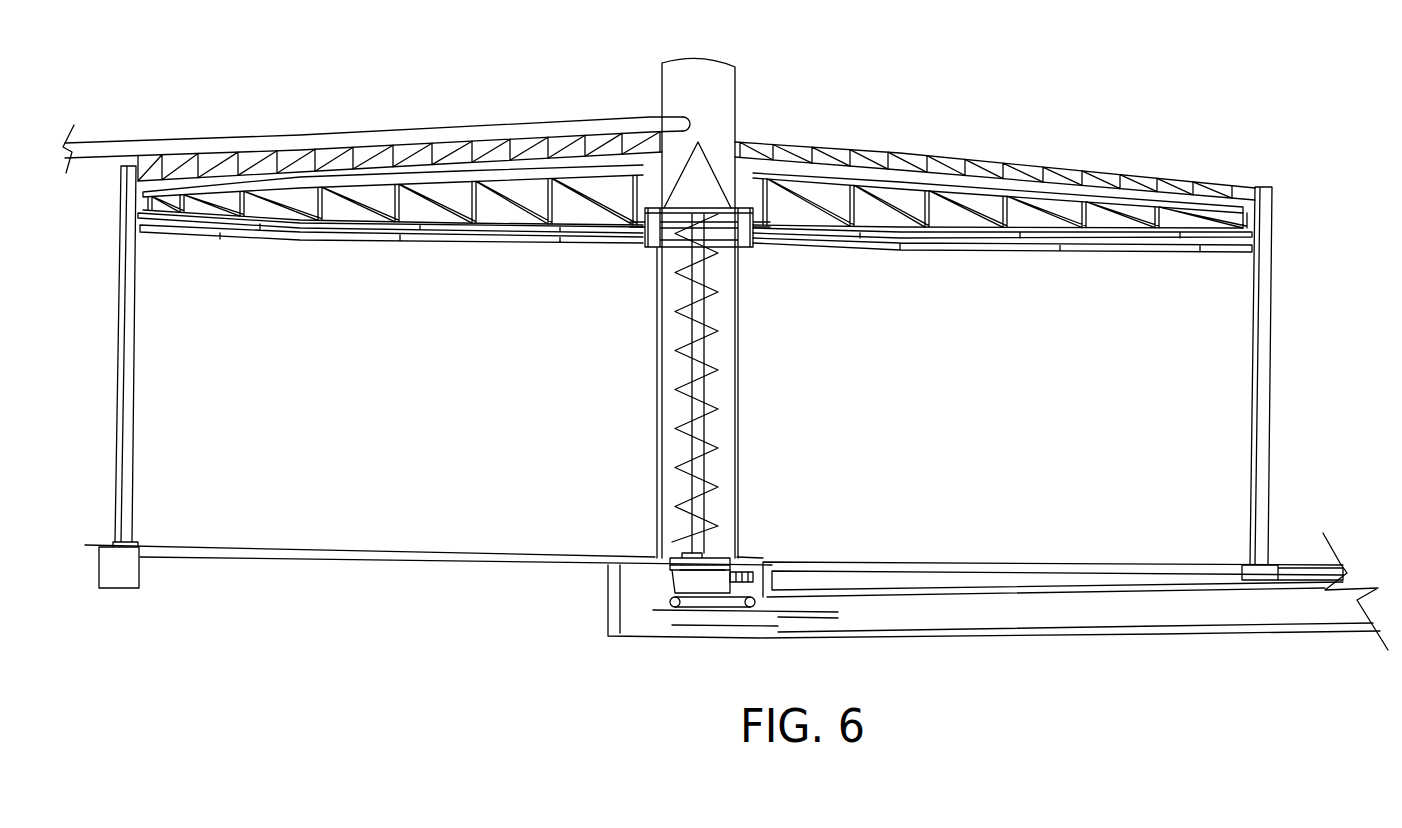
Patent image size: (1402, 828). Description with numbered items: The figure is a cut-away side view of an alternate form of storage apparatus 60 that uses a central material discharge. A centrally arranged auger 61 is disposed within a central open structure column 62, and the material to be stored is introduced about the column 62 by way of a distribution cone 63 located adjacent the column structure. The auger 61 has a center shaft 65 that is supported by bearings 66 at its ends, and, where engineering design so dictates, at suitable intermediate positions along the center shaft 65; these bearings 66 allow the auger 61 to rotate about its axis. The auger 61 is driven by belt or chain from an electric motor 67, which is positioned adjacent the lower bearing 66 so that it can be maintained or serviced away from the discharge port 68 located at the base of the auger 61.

The storage apparatus 60 is at (925, 125).
The auger 61 is at (708, 442).
The central open structure column 62 is at (757, 375).
The distribution cone 63 is at (710, 158).
The center shaft 65 is at (697, 317).
The bearings 66 is at (660, 250).
The electric motor 67 is at (770, 577).
The discharge port 68 is at (652, 558).